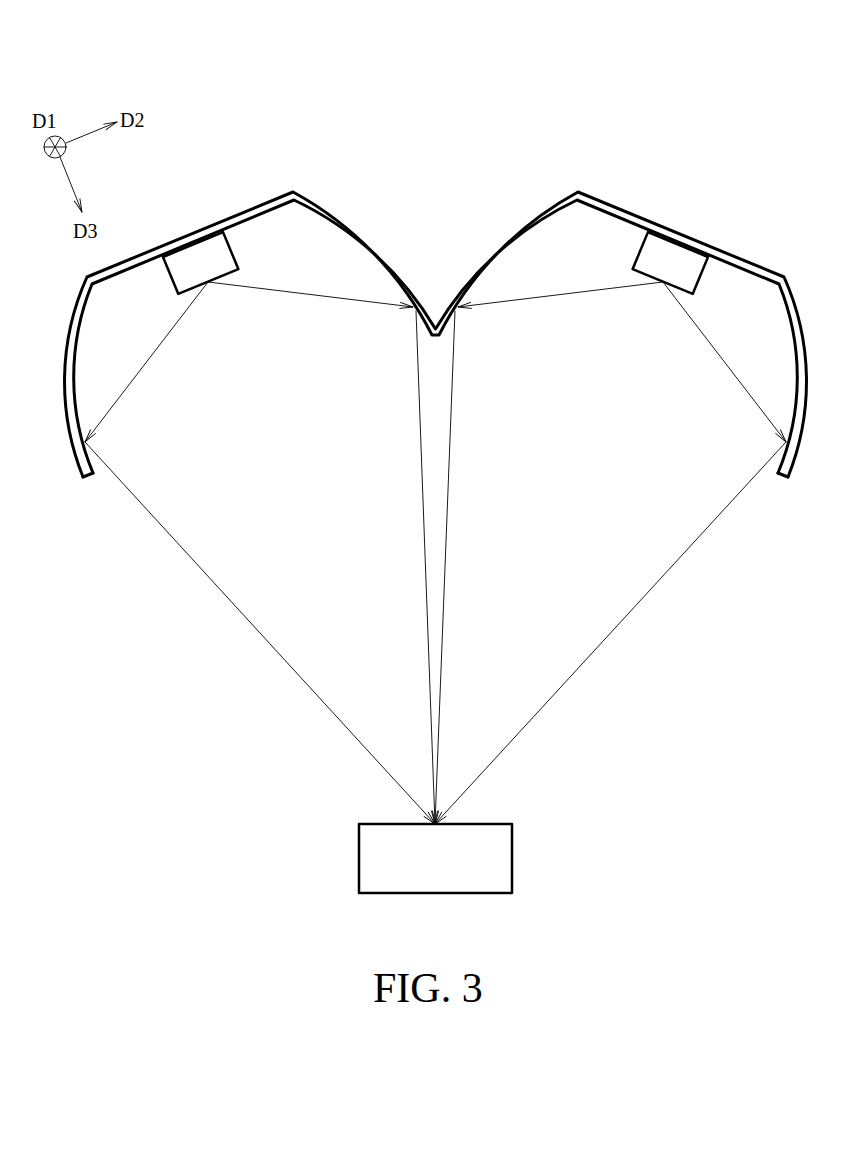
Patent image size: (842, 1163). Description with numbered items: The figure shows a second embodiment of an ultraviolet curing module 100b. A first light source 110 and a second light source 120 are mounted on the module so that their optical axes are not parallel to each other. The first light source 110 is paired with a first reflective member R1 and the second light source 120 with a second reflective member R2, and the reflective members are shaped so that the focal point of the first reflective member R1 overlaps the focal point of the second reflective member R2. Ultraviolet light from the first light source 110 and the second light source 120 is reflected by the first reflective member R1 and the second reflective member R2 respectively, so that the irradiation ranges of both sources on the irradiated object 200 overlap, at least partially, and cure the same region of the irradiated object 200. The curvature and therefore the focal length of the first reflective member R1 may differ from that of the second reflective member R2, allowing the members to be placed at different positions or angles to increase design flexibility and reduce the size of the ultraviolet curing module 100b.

The ultraviolet curing module 100b is at (588, 88).
The first light source 110 is at (200, 263).
The second light source 120 is at (670, 263).
The irradiated object 200 is at (419, 872).
The first reflective member R1 is at (349, 225).
The second reflective member R2 is at (522, 225).